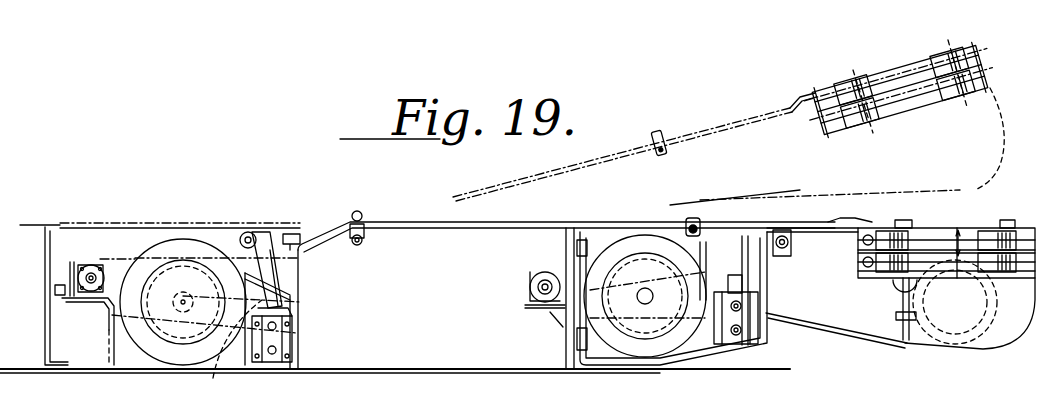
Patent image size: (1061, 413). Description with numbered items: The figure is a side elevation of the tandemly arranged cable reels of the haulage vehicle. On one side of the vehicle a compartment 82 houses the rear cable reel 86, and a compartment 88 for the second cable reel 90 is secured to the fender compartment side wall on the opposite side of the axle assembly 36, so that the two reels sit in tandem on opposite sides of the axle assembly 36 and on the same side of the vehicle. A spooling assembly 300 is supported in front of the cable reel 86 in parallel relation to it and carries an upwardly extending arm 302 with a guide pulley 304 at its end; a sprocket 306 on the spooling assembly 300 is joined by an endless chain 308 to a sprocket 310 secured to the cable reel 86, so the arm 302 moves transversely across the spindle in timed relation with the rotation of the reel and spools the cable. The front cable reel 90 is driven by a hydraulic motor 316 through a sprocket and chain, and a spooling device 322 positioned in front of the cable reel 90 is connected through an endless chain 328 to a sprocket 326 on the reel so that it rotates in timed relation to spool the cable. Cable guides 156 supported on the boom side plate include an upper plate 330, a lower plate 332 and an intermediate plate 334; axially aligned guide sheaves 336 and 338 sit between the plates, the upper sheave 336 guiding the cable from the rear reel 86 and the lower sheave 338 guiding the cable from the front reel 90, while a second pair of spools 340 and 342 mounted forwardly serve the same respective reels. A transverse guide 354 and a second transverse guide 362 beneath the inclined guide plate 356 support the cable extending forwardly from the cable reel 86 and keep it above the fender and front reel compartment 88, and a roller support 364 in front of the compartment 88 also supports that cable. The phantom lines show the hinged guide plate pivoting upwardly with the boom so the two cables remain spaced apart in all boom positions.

The axle assembly 36 is at (455, 315).
The compartment 82 is at (126, 226).
The cable reel 86 is at (172, 356).
The compartment 88 is at (703, 345).
The second cable reel 90 is at (648, 348).
The cable guides 156 is at (969, 32).
The spooling assembly 300 is at (292, 318).
The arm 302 is at (272, 235).
The guide pulley 304 is at (243, 233).
The sprocket 306 is at (305, 342).
The endless chain 308 is at (214, 370).
The sprocket 310 is at (206, 302).
The hydraulic motor 316 is at (530, 284).
The spooling device 322 is at (772, 306).
The sprocket 326 is at (638, 296).
The endless chain 328 is at (692, 276).
The upper plate 330 is at (912, 62).
The lower plate 332 is at (895, 127).
The intermediate plate 334 is at (948, 167).
The guide sheave 336 is at (853, 78).
The guide sheave 338 is at (872, 128).
The upper spool 340 is at (982, 50).
The lower spool 342 is at (990, 76).
The transverse guide 354 is at (672, 148).
The inclined guide plate 356 is at (328, 232).
The second transverse guide 362 is at (362, 243).
The roller support 364 is at (790, 243).